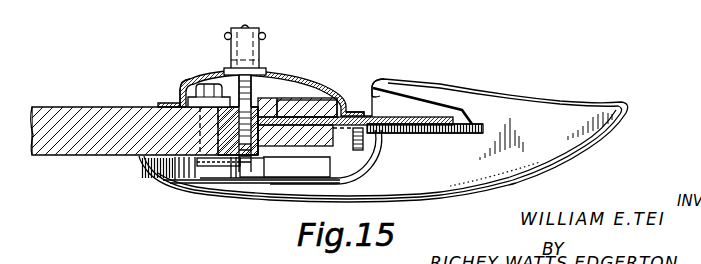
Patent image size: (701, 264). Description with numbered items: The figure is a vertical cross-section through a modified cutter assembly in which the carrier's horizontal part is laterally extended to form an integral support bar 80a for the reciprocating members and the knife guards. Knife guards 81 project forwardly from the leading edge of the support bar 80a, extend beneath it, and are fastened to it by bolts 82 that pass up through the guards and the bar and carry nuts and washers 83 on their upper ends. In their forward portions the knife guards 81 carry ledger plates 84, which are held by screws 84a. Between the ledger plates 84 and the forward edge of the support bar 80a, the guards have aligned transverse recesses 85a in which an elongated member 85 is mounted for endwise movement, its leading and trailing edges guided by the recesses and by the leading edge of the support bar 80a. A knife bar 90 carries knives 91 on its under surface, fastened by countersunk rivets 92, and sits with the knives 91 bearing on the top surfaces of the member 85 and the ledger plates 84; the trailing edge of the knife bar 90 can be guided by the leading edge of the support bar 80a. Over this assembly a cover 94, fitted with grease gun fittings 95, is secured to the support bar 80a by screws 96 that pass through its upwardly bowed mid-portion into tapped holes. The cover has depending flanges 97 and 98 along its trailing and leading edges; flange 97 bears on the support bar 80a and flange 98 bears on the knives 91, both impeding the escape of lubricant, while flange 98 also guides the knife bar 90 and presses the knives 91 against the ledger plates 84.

The support bar 80a is at (87, 136).
The knife guards 81 is at (536, 125).
The bolts 82 is at (204, 78).
The nuts and washers 83 is at (190, 79).
The ledger plates 84 is at (428, 133).
The screws 84a is at (367, 154).
The elongated member 85 is at (288, 148).
The transverse recesses 85a is at (307, 143).
The knife bar 90 is at (277, 100).
The knives 91 is at (331, 116).
The countersunk rivets 92 is at (306, 90).
The cover 94 is at (216, 78).
The grease gun fittings 95 is at (244, 27).
The screws 96 is at (247, 90).
The depending flange 97 is at (178, 89).
The depending flange 98 is at (367, 112).